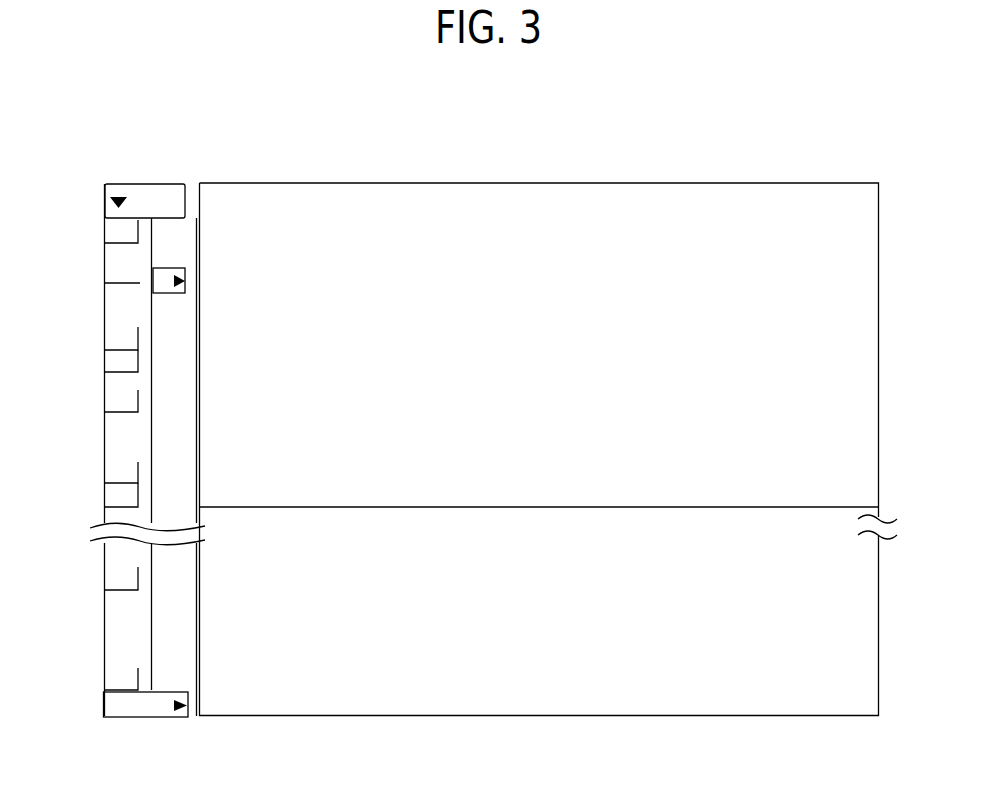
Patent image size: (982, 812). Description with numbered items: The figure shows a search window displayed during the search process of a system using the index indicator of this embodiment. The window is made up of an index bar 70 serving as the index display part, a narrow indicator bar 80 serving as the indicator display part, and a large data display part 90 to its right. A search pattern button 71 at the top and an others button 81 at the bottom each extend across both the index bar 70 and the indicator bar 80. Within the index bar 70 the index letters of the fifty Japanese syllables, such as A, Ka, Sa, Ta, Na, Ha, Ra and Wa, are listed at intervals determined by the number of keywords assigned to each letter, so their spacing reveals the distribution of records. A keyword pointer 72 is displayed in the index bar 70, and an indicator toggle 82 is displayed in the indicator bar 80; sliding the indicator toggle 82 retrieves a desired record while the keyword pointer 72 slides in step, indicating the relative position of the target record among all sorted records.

The index bar 70 is at (152, 172).
The search pattern button 71 is at (105, 204).
The keyword pointer 72 is at (123, 286).
The indicator bar 80 is at (197, 172).
The others button 81 is at (187, 704).
The indicator toggle 82 is at (168, 268).
The data display part 90 is at (875, 170).